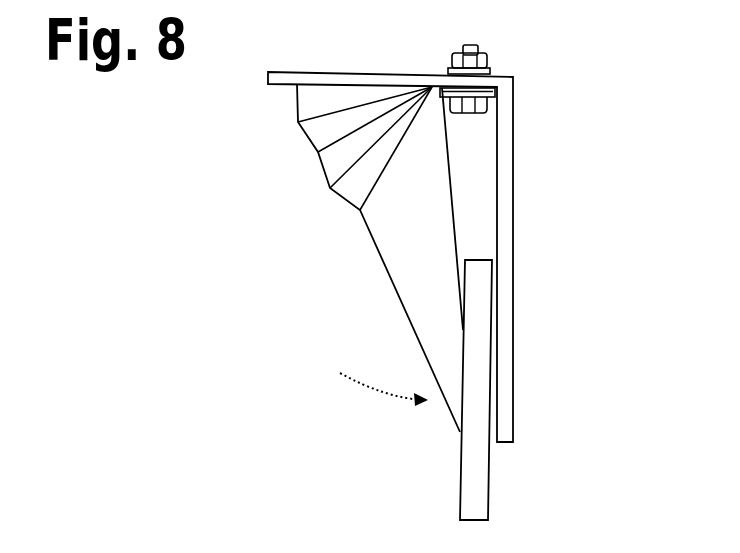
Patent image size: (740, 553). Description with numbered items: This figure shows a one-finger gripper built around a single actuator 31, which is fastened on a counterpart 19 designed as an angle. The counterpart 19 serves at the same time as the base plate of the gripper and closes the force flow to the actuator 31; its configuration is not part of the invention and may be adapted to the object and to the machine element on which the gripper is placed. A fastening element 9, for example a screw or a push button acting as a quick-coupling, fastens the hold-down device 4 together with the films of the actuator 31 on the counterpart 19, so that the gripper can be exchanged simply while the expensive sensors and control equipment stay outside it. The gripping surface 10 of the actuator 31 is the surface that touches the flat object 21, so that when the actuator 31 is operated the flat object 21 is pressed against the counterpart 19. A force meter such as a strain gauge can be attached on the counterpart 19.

The hold-down device 4 is at (480, 96).
The fastening element 9 is at (480, 106).
The gripping surface 10 is at (457, 224).
The counterpart 19 is at (503, 153).
The flat object 21 is at (478, 467).
The actuator 31 is at (349, 266).